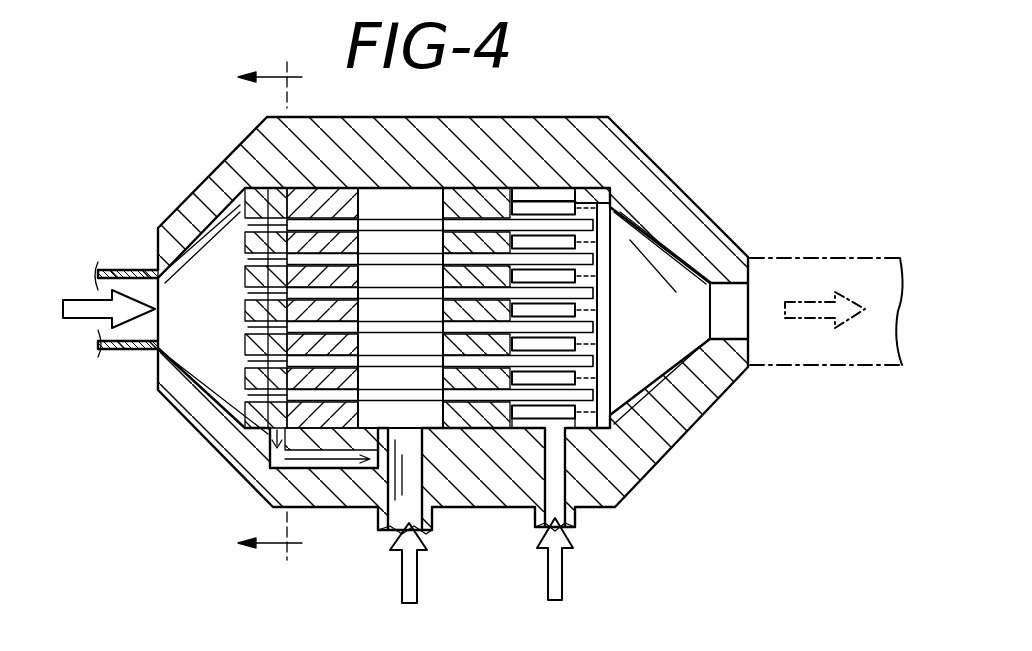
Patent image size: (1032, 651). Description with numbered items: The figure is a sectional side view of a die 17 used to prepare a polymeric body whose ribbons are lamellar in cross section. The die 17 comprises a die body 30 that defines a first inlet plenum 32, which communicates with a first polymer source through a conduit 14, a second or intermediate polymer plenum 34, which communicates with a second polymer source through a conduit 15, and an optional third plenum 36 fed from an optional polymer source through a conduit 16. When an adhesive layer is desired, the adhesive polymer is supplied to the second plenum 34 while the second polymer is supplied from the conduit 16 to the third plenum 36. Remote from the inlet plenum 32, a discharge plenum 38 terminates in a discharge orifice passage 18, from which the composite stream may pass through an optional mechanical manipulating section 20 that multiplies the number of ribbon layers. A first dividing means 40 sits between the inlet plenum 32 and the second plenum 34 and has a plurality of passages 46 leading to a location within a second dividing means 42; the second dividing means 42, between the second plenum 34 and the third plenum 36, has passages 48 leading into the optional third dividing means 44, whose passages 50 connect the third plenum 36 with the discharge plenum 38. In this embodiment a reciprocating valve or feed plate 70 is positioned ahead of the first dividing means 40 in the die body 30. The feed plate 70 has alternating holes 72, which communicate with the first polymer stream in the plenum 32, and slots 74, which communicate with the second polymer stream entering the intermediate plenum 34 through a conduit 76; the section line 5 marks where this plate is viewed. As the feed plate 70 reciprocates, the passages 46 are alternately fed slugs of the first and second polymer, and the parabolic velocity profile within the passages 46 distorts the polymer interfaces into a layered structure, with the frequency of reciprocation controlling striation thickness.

The section line 5- 5 is at (270, 315).
The conduit 14 is at (132, 270).
The conduit 15 is at (437, 532).
The conduit 16 is at (578, 523).
The die 17 is at (641, 124).
The discharge orifice passage 18 is at (753, 297).
The mechanical manipulating section 20 is at (813, 367).
The die body 30 is at (178, 415).
The first inlet plenum 32 is at (200, 215).
The second or intermediate polymer plenum 34 is at (402, 210).
The third plenum 36 is at (547, 197).
The discharge plenum 38 is at (663, 272).
The first dividing means 40 is at (342, 197).
The second dividing means 42 is at (480, 197).
The third dividing means 44 is at (597, 190).
The passages 46 is at (300, 200).
The passages 48 is at (597, 330).
The passages 50 is at (617, 397).
The reciprocating valve or feed plate 70 is at (262, 125).
The holes 72 is at (245, 326).
The slots 74 is at (245, 400).
The conduit 76 is at (340, 468).